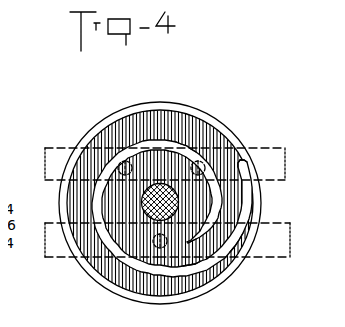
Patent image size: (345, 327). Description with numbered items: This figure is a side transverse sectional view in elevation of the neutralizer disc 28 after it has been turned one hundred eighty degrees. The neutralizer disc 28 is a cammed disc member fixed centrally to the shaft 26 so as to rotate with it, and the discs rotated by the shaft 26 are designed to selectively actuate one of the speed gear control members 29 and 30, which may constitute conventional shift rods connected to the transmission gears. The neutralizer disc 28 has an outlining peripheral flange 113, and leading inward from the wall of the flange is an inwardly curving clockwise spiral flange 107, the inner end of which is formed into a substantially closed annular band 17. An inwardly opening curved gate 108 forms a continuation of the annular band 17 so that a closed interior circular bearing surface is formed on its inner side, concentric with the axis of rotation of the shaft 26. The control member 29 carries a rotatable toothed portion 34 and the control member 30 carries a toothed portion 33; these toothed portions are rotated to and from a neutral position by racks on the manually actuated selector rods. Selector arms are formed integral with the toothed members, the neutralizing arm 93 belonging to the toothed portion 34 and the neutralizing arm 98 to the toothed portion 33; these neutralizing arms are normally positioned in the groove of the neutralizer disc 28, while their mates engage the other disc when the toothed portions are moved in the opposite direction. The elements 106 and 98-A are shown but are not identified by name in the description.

The annular band 17 is at (221, 152).
The shaft 26 is at (171, 193).
The neutralizer disc 28 is at (95, 119).
The speed gear control member 29 is at (277, 236).
The speed gear control member 30 is at (272, 161).
The toothed portion 33 is at (46, 160).
The toothed portion 34 is at (50, 248).
The neutralizing arm 93 is at (178, 238).
The neutralizing arm 98 is at (201, 162).
The opening in body 98-A is at (117, 156).
The inner turn of spiral strip 106 is at (181, 127).
The spiral flange 107 is at (167, 287).
The curved gate 108 is at (184, 258).
The peripheral flange 113 is at (231, 257).